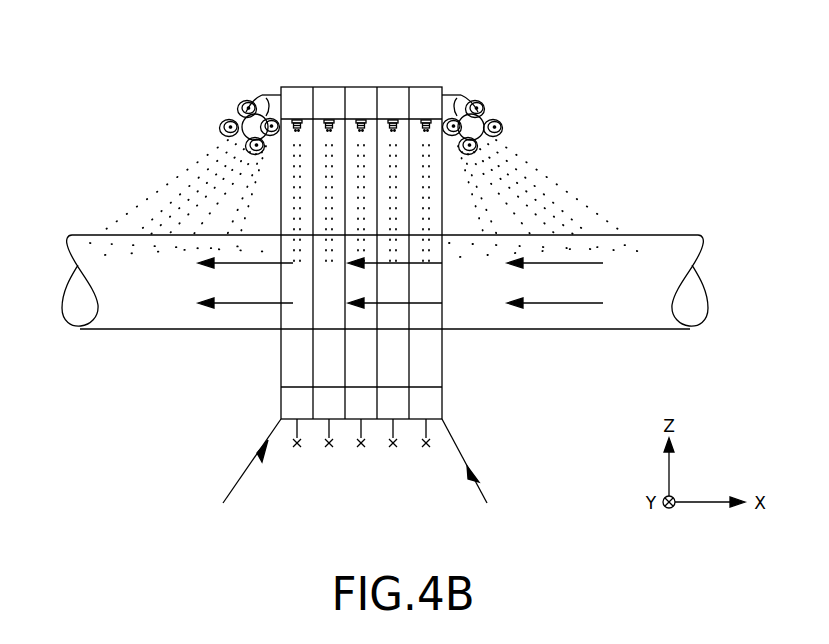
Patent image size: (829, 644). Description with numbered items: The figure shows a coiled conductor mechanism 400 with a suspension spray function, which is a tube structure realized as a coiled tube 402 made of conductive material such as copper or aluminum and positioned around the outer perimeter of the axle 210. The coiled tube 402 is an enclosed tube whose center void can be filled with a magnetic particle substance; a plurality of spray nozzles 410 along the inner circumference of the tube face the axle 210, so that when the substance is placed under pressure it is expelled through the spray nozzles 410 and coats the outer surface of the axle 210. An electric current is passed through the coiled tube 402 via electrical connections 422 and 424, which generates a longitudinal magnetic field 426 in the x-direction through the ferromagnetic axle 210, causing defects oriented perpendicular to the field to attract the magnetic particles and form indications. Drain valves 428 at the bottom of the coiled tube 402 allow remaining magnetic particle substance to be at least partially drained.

The coiled conductor mechanism 400 is at (148, 99).
The coiled tube 402 is at (318, 87).
The spray nozzles 410 is at (397, 121).
The axle 210 is at (663, 247).
The longitudinal magnetic field 426 is at (572, 260).
The drain valves 428 is at (418, 446).
The electrical connection 424 is at (235, 485).
The electrical connection 422 is at (483, 493).